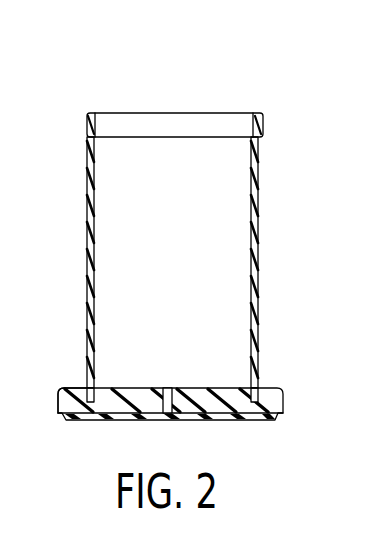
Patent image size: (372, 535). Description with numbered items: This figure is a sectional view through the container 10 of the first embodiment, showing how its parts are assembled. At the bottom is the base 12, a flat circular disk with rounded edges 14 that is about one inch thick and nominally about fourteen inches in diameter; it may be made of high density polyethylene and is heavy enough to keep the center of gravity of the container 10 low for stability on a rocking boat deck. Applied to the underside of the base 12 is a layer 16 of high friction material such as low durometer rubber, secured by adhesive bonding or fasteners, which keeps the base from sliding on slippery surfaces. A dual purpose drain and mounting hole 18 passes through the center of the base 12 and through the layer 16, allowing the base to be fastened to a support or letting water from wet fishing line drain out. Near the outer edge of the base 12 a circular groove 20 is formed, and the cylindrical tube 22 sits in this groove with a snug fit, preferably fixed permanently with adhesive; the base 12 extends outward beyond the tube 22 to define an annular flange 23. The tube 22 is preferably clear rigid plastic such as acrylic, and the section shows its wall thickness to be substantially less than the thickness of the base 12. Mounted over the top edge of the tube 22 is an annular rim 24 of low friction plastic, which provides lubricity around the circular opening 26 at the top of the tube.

The container 10 is at (219, 65).
The base 12 is at (285, 398).
The rounded edges 14 is at (61, 391).
The layer of high friction material 16 is at (97, 421).
The drain and mounting hole 18 is at (171, 388).
The circular groove 20 is at (87, 371).
The cylindrical tube 22 is at (258, 234).
The annular flange 23 is at (267, 390).
The annular rim 24 is at (88, 117).
The circular opening 26 is at (170, 158).